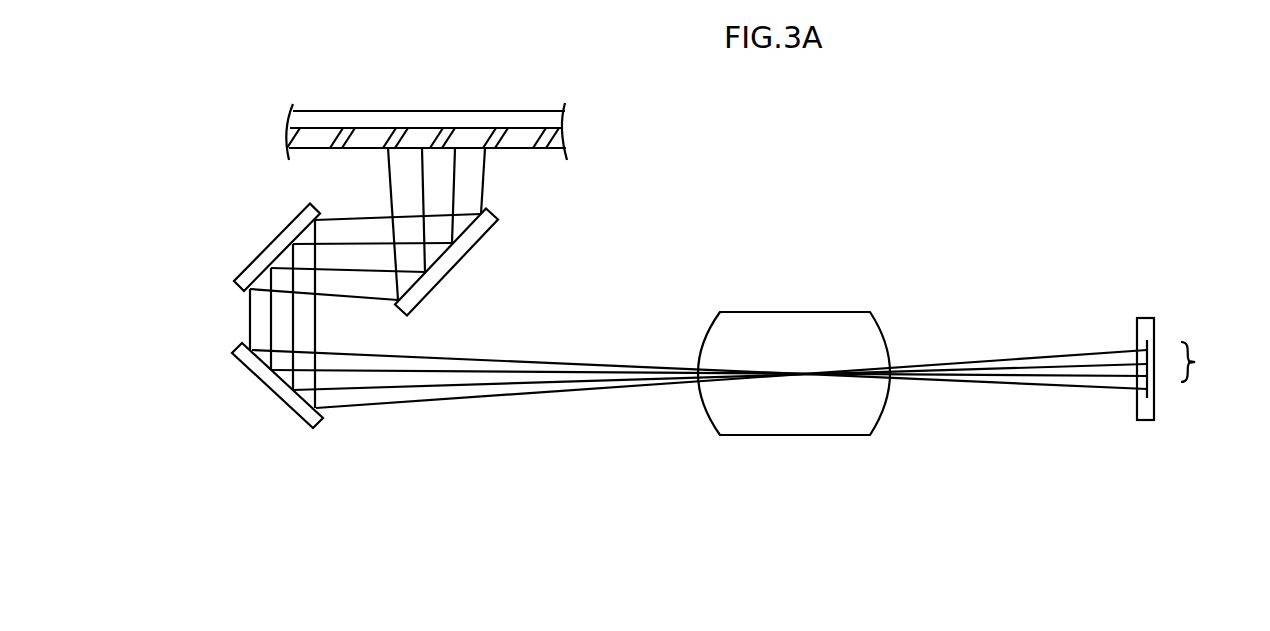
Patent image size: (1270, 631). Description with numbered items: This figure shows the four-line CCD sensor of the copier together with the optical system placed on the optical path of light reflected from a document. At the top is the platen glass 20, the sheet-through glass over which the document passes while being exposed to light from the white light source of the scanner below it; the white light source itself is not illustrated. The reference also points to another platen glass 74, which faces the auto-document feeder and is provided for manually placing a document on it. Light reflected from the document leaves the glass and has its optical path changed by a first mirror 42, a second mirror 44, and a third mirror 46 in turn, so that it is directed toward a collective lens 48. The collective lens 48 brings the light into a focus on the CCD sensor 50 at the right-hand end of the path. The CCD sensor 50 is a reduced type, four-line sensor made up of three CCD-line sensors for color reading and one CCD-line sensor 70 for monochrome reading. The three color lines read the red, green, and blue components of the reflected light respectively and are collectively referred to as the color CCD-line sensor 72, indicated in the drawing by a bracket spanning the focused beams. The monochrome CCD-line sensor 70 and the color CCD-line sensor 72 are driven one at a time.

The platen glass 20 is at (460, 139).
The platen glass 74 is at (523, 149).
The first mirror 42 is at (472, 250).
The second mirror 44 is at (269, 243).
The third mirror 46 is at (268, 391).
The collective lens 48 is at (813, 312).
The CCD sensor 50 is at (1148, 318).
The CCD-line sensor 70 is at (1165, 390).
The color CCD-line sensor 72 is at (1211, 362).